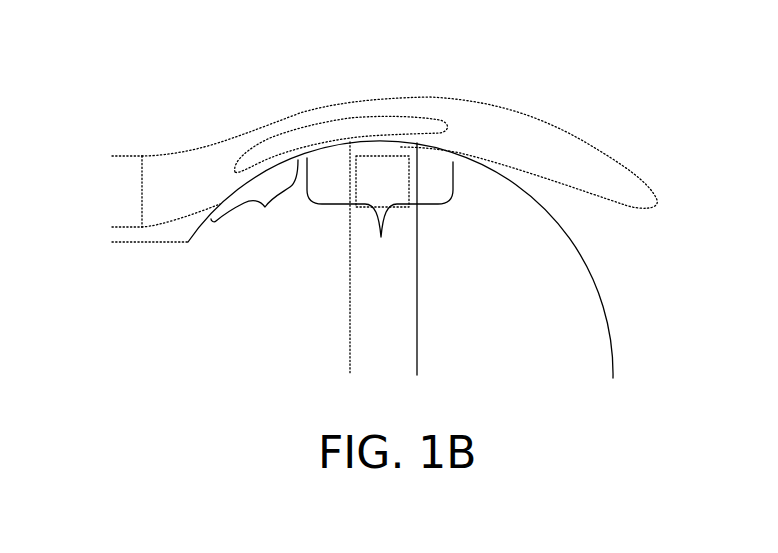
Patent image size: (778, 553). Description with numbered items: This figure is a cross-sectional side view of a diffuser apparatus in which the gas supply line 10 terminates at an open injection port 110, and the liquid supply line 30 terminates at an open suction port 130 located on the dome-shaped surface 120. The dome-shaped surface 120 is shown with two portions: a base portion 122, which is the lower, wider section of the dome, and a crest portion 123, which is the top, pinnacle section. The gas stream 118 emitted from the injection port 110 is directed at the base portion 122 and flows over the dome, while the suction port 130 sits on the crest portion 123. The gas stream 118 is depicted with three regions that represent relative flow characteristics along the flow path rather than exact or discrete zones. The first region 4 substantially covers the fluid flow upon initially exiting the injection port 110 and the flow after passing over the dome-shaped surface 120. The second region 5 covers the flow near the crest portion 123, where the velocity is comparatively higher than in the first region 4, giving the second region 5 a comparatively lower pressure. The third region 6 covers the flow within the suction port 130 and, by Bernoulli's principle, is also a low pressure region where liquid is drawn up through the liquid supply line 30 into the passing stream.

The gas supply line 10 is at (128, 153).
The injection port 110 is at (147, 167).
The gas stream 118 is at (213, 146).
The first region 4 is at (209, 184).
The dome-shaped surface 120 is at (578, 258).
The liquid supply line 30 is at (417, 310).
The suction port 130 is at (404, 140).
The second region 5 is at (321, 141).
The third region 6 is at (389, 194).
The base portion 122 is at (254, 197).
The crest portion 123 is at (380, 215).